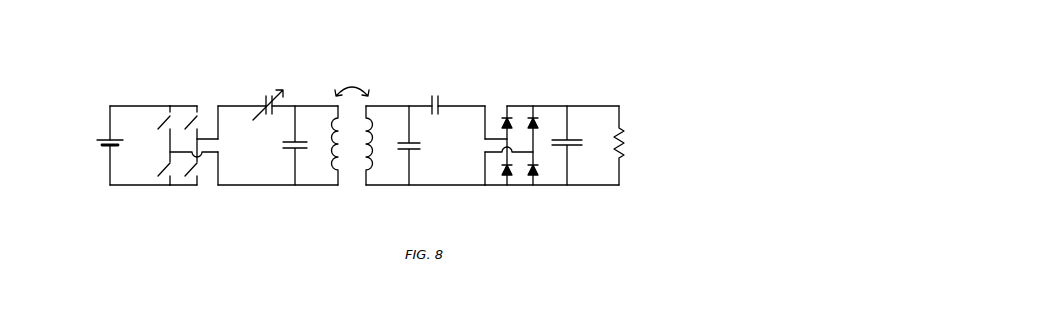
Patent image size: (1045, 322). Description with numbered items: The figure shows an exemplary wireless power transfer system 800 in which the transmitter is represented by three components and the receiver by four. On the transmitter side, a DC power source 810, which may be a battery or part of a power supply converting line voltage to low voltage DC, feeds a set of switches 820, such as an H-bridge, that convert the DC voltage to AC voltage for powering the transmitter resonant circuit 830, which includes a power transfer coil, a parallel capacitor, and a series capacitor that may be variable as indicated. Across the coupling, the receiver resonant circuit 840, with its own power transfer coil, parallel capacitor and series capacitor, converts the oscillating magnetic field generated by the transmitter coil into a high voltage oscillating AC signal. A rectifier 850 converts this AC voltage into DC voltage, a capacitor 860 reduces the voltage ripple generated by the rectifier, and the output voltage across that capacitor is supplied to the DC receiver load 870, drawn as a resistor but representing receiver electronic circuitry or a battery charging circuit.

The wireless power transfer system 800 is at (704, 51).
The DC power source 810 is at (96, 108).
The set of switches 820 is at (177, 94).
The transmitter resonant circuit 830 is at (335, 60).
The receiver resonant circuit 840 is at (465, 60).
The rectifier 850 is at (538, 60).
The capacitor 860 is at (567, 94).
The DC receiver load 870 is at (622, 102).